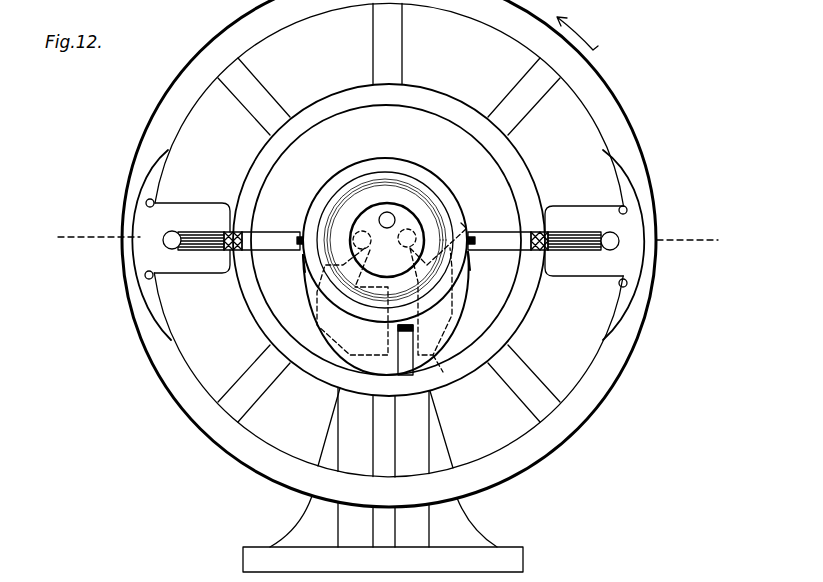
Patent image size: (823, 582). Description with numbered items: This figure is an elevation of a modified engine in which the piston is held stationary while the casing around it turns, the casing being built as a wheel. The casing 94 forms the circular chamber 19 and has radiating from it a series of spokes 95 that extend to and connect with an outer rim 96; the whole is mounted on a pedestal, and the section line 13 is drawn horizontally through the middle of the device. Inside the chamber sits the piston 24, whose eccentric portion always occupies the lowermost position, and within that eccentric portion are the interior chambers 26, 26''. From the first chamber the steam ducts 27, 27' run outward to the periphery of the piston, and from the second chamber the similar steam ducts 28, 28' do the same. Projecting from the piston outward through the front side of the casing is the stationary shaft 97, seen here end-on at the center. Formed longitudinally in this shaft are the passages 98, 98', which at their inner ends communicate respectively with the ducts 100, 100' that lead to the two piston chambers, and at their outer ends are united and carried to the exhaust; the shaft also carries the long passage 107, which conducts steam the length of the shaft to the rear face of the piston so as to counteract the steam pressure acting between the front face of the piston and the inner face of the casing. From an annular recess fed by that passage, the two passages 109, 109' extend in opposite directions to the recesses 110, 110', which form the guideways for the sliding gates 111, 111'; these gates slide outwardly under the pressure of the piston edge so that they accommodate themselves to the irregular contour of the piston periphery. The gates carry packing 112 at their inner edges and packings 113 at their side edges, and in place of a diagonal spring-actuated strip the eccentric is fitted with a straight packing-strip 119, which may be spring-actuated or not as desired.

The section line 13 is at (388, 236).
The circular chamber 19 is at (383, 351).
The piston 24 is at (437, 177).
The interior chamber 26 is at (352, 301).
The interior chamber 26'' is at (438, 300).
The steam duct 27 is at (343, 338).
The steam duct 27' is at (283, 272).
The steam duct 28 is at (428, 336).
The steam duct 28' is at (485, 273).
The casing 94 is at (443, 100).
The spokes 95 is at (520, 128).
The outer rim 96 is at (627, 117).
The stationary shaft 97 is at (387, 240).
The longitudinal passage 98 is at (365, 218).
The longitudinal passage 98' is at (421, 229).
The duct 100 is at (372, 240).
The duct 100' is at (479, 209).
The long passage 107 is at (389, 216).
The passage 109 is at (128, 259).
The passage 109' is at (648, 261).
The recess 110 is at (201, 265).
The recess 110' is at (574, 218).
The sliding gate 111 is at (271, 226).
The sliding gate 111' is at (499, 229).
The packing 112 is at (297, 244).
The packing 113 is at (232, 250).
The straight packing-strip 119 is at (405, 367).